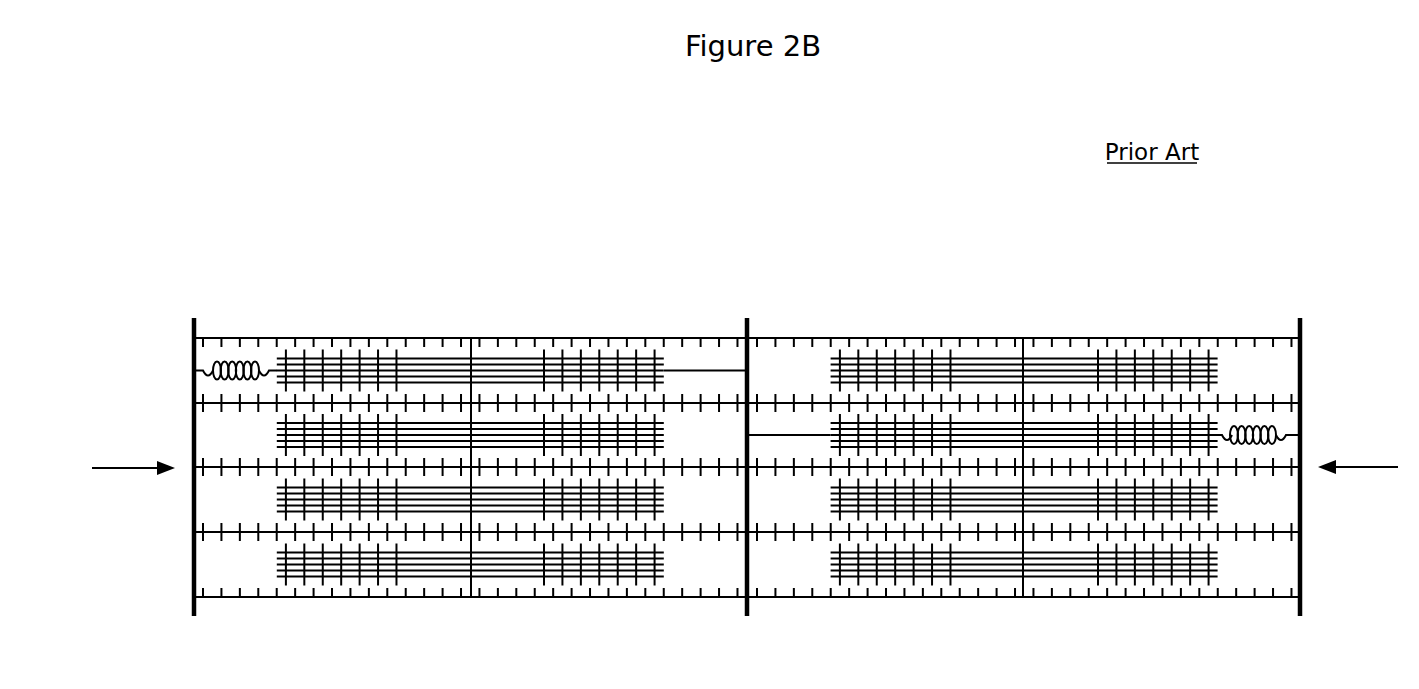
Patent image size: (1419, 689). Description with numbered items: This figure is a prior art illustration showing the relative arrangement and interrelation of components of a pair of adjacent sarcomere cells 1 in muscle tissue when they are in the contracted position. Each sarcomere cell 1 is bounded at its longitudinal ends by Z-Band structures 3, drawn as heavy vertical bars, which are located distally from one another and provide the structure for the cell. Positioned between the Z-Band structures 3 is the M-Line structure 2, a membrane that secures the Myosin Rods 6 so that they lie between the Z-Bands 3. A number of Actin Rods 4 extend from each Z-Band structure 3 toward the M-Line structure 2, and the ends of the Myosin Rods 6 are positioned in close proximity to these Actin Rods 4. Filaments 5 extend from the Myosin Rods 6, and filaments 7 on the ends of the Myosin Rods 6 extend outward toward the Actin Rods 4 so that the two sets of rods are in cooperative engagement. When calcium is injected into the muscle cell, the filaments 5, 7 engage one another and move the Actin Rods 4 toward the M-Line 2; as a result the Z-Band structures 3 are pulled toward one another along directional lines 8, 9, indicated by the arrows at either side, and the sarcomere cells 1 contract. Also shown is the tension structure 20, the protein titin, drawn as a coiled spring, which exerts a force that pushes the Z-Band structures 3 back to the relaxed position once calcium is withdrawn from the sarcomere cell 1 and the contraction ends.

The sarcomere cell 1 is at (300, 194).
The M-Line structure 2 is at (468, 345).
The Z-Band structures 3 is at (196, 327).
The Actin Rods 4 is at (673, 598).
The filaments 5 is at (260, 545).
The Myosin Rods 6 is at (507, 357).
The filaments 7 is at (283, 417).
The directional line 8 is at (139, 465).
The directional line 9 is at (1356, 465).
The tension structure 20 is at (250, 358).